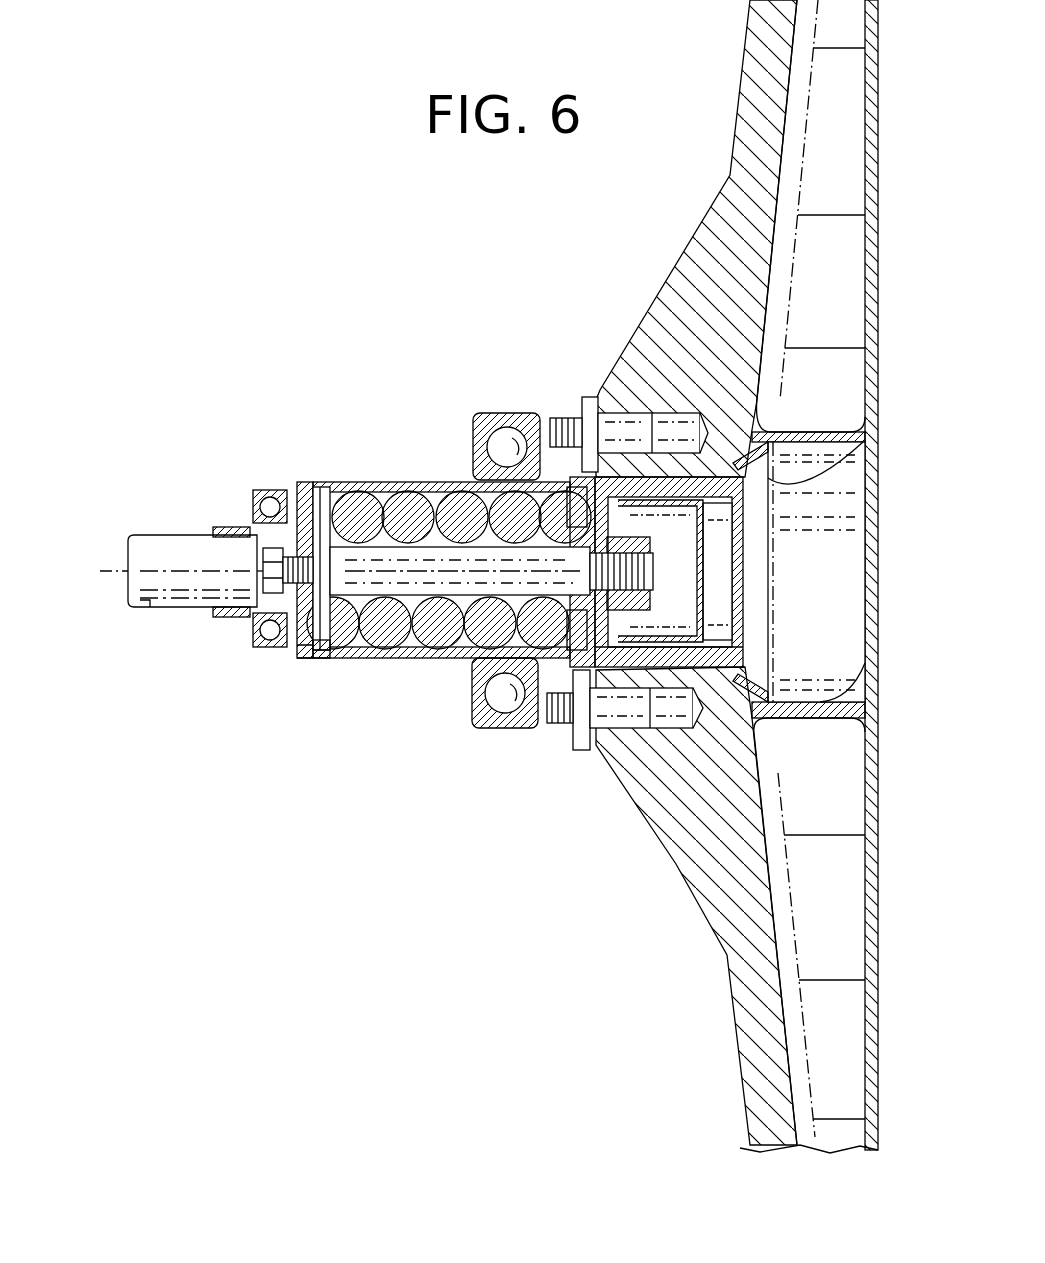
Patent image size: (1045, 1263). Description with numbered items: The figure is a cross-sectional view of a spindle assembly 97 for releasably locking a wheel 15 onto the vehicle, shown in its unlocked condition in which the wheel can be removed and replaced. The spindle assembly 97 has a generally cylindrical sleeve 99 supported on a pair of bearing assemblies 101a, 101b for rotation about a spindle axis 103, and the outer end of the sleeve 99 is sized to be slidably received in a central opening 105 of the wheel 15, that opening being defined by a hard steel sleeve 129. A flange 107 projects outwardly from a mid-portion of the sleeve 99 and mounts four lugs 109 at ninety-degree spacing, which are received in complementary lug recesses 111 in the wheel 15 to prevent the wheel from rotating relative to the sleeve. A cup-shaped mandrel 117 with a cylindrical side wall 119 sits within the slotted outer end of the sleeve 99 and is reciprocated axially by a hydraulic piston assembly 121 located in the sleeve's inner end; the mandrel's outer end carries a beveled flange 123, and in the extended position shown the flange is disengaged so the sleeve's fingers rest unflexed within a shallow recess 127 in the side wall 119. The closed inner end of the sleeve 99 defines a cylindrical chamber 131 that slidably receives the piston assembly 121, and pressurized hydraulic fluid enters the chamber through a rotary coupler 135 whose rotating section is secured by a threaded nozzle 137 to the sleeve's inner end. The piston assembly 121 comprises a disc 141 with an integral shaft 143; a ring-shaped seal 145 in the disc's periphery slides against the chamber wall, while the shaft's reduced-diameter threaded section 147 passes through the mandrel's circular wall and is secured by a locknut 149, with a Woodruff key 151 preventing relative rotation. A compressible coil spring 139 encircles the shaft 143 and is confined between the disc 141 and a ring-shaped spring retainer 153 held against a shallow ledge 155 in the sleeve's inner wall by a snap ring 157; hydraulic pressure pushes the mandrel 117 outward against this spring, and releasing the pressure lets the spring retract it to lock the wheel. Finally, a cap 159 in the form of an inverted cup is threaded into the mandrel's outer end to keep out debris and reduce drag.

The wheel 15 is at (743, 1040).
The spindle assembly 97 is at (317, 655).
The sleeve 99 is at (412, 660).
The bearing assembly 101a is at (483, 725).
The bearing assembly 101b is at (250, 648).
The spindle axis 103 is at (167, 566).
The central opening 105 is at (873, 664).
The flange 107 is at (573, 733).
The lugs 109 is at (617, 712).
The lug recesses 111 is at (678, 717).
The cup-shaped mandrel 117 is at (743, 522).
The cylindrical side wall 119 is at (705, 630).
The hydraulic piston assembly 121 is at (263, 490).
The beveled flange 123 is at (740, 655).
The shallow recess 127 is at (687, 490).
The steel sleeve 129 is at (878, 420).
The cylindrical chamber 131 is at (300, 657).
The rotary coupler 135 is at (155, 600).
The threaded nozzle 137 is at (293, 553).
The compressible coil spring 139 is at (455, 508).
The disc 141 is at (313, 527).
The shaft 143 is at (388, 563).
The ring-shaped seal 145 is at (320, 677).
The threaded section 147 is at (652, 544).
The locknut 149 is at (712, 532).
The Woodruff key 151 is at (590, 553).
The spring retainer 153 is at (557, 487).
The shallow ledge 155 is at (563, 722).
The snap ring 157 is at (600, 487).
The cap 159 is at (654, 575).